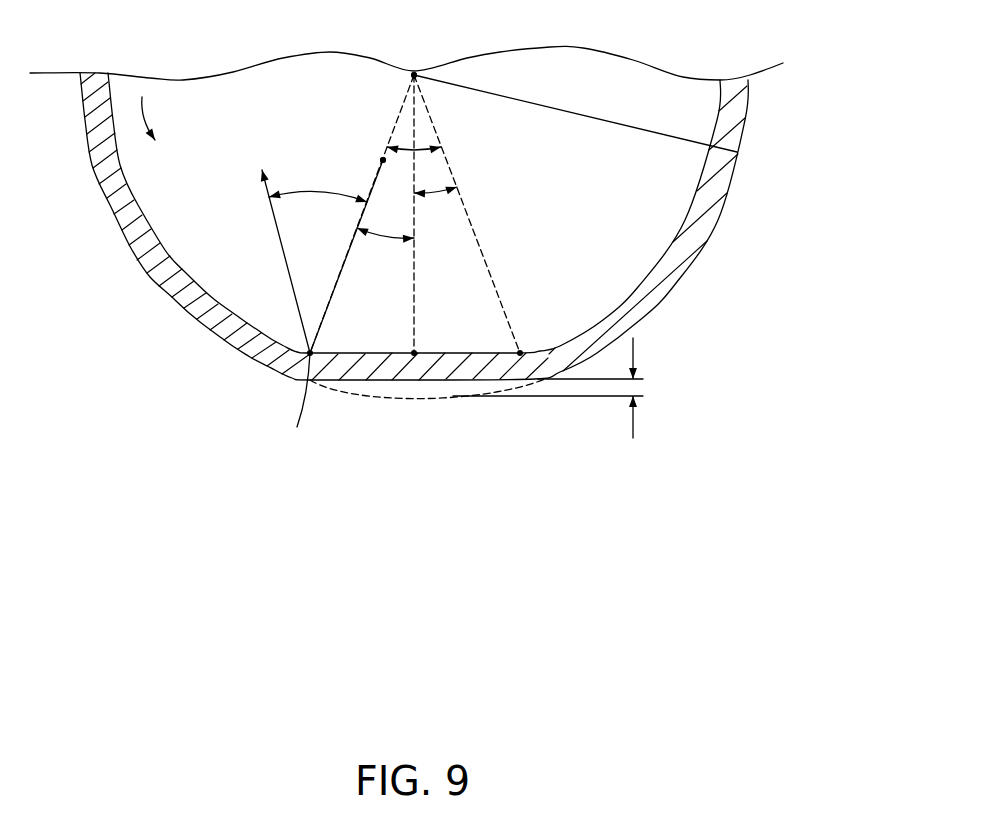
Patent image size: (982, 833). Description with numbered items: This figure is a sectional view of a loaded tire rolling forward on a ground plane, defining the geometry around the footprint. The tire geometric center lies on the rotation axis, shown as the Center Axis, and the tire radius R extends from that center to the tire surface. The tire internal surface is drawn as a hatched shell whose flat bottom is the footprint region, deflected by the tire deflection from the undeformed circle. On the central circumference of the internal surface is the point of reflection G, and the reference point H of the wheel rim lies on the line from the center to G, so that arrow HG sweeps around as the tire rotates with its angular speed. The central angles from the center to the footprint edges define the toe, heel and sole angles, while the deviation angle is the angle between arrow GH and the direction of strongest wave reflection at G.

The tire geometric center on the rotation axis Center Axis is at (414, 74).
The reference point of the wheel rim H is at (383, 160).
The tire radius R is at (575, 113).
The point of reflection G is at (285, 313).